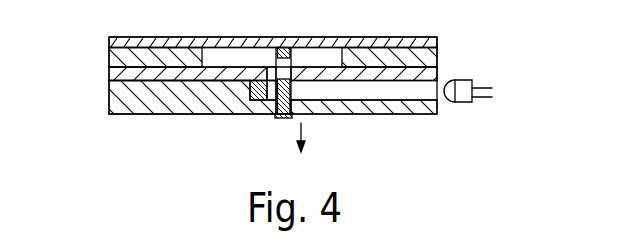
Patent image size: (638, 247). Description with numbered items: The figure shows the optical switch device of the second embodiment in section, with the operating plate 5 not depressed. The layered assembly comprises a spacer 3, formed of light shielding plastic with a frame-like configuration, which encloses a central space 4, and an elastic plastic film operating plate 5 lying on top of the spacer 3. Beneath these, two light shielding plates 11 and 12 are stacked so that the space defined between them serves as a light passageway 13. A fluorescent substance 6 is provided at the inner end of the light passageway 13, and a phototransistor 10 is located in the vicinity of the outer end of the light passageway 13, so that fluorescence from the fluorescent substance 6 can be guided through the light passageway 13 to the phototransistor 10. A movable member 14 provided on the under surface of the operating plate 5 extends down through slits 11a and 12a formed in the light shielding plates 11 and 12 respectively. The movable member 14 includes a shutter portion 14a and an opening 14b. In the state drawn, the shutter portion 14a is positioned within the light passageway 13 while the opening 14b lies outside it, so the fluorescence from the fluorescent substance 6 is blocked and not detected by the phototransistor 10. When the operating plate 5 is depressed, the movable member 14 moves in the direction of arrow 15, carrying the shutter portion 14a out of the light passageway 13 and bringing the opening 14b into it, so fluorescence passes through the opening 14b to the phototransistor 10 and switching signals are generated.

The spacer 3 is at (438, 53).
The central space 4 is at (224, 57).
The operating plate 5 is at (369, 37).
The fluorescent substance 6 is at (252, 93).
The phototransistor 10 is at (461, 102).
The light shielding plate 11 is at (108, 72).
The slit 11a is at (271, 68).
The light shielding plate 12 is at (108, 100).
The slit 12a is at (272, 105).
The light passageway 13 is at (380, 92).
The movable member 14 is at (288, 63).
The shutter portion 14a is at (281, 118).
The opening 14b is at (292, 56).
The arrow 15 is at (305, 137).